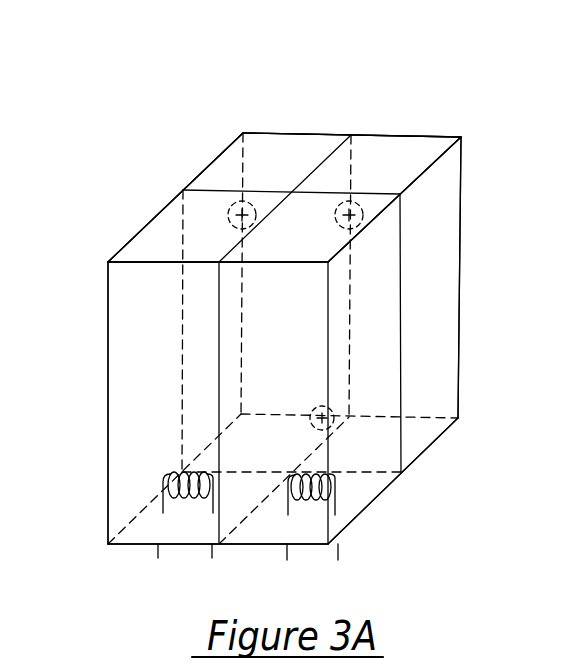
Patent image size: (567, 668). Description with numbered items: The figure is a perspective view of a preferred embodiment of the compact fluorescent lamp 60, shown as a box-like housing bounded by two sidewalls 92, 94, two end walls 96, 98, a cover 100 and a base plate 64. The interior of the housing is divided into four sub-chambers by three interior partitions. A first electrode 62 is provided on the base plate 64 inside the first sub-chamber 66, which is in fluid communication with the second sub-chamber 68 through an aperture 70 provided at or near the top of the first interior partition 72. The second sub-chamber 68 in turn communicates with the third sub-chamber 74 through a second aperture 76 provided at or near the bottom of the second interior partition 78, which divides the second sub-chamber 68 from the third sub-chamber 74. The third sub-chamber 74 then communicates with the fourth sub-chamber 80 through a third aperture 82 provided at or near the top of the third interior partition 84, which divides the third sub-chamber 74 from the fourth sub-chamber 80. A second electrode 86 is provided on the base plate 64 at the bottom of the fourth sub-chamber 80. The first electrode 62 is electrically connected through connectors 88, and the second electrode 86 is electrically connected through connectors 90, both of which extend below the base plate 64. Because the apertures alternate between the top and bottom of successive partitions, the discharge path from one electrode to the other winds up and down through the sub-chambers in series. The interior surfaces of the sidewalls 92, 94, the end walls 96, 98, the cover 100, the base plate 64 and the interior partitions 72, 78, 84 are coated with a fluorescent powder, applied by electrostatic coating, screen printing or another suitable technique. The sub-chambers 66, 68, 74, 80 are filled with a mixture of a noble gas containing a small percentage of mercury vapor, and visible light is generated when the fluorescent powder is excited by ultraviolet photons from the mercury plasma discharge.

The compact fluorescent lamp 60 is at (306, 86).
The first electrode 62 is at (164, 492).
The base plate 64 is at (352, 505).
The first sub-chamber 66 is at (138, 237).
The second sub-chamber 68 is at (267, 144).
The aperture 70 is at (228, 215).
The first interior partition 72 is at (208, 200).
The third sub-chamber 74 is at (413, 134).
The second aperture 76 is at (330, 405).
The second interior partition 78 is at (293, 190).
The fourth sub-chamber 80 is at (372, 233).
The third aperture 82 is at (362, 215).
The third interior partition 84 is at (390, 277).
The second electrode 86 is at (335, 487).
The connectors 88 is at (212, 552).
The connectors 90 is at (287, 552).
The sidewall 92 is at (108, 310).
The sidewall 94 is at (438, 335).
The end wall 96 is at (137, 377).
The end wall 98 is at (456, 136).
The cover 100 is at (388, 138).